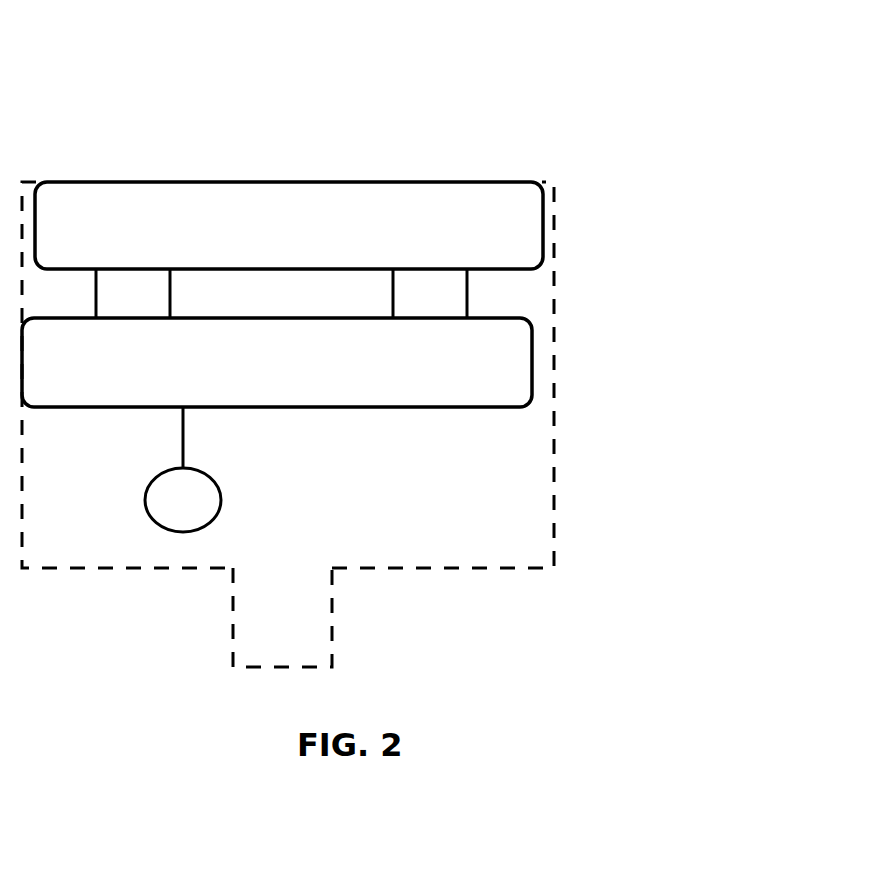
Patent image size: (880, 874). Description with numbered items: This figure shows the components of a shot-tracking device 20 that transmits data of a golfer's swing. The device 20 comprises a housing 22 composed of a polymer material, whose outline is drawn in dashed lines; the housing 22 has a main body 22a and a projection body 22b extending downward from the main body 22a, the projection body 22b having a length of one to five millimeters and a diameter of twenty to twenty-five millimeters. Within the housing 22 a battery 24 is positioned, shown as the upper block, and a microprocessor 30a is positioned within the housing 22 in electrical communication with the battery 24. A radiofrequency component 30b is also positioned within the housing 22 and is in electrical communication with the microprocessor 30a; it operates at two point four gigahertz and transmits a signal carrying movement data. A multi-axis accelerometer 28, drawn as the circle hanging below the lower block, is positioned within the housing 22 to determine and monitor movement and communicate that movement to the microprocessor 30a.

The device 20 is at (458, 79).
The housing 22 is at (23, 181).
The main body 22a is at (556, 318).
The projection body 22b is at (231, 631).
The battery 24 is at (289, 225).
The multi-axis accelerometer 28 is at (183, 469).
The microprocessor 30a is at (133, 294).
The radiofrequency component 30b is at (430, 294).